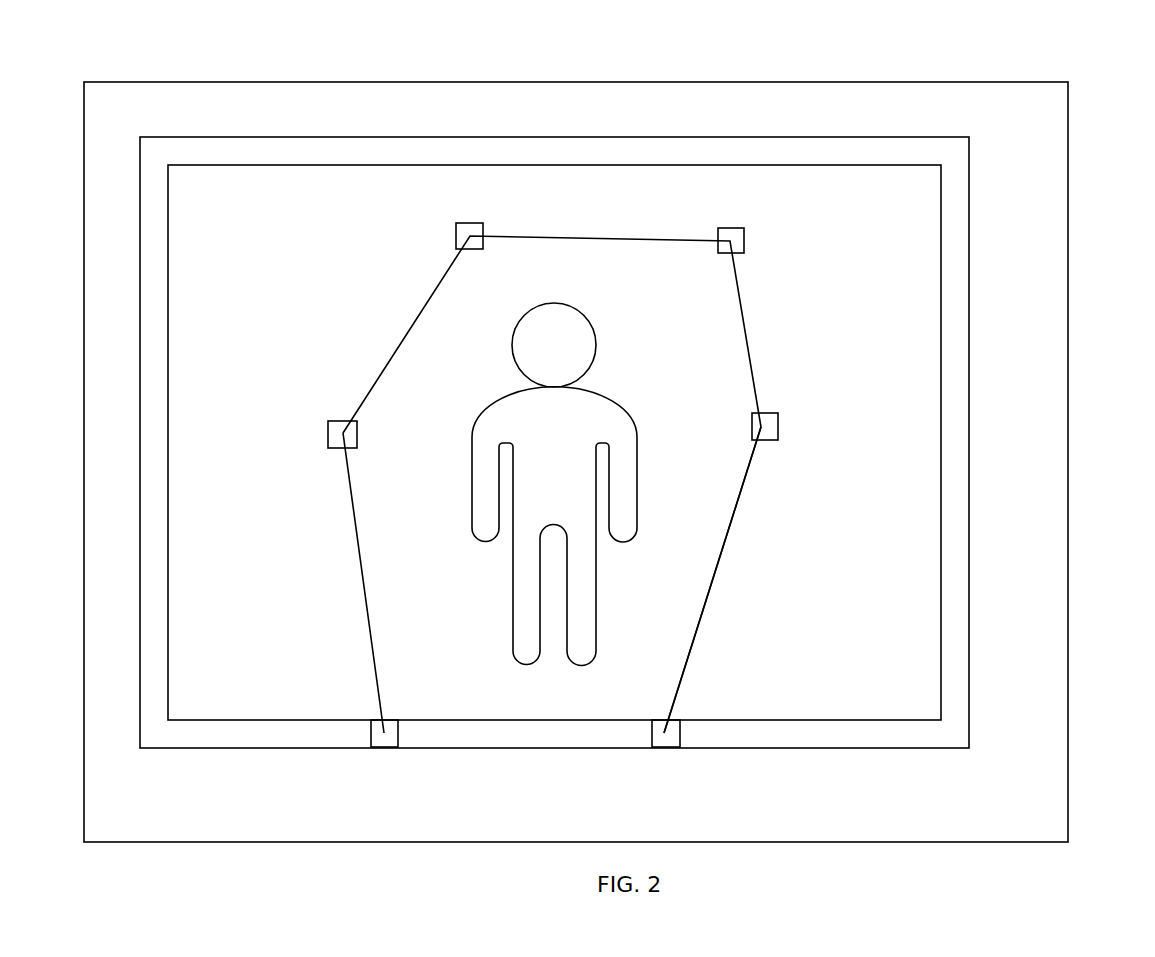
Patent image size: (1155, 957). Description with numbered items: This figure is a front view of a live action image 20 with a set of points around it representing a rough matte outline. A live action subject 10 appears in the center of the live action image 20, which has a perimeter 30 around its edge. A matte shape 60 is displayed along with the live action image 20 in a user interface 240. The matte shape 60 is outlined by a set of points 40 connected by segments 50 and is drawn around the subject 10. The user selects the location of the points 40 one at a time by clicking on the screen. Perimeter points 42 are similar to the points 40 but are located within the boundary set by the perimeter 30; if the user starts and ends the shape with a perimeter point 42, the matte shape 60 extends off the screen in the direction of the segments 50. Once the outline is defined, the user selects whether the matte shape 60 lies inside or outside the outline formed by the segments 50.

The live action subject 10 is at (618, 395).
The live action image 20 is at (889, 214).
The perimeter 30 is at (955, 246).
The points 40 is at (768, 425).
The perimeter points 42 is at (387, 735).
The segments 50 is at (715, 575).
The matte shape 60 is at (603, 278).
The user interface 240 is at (855, 842).